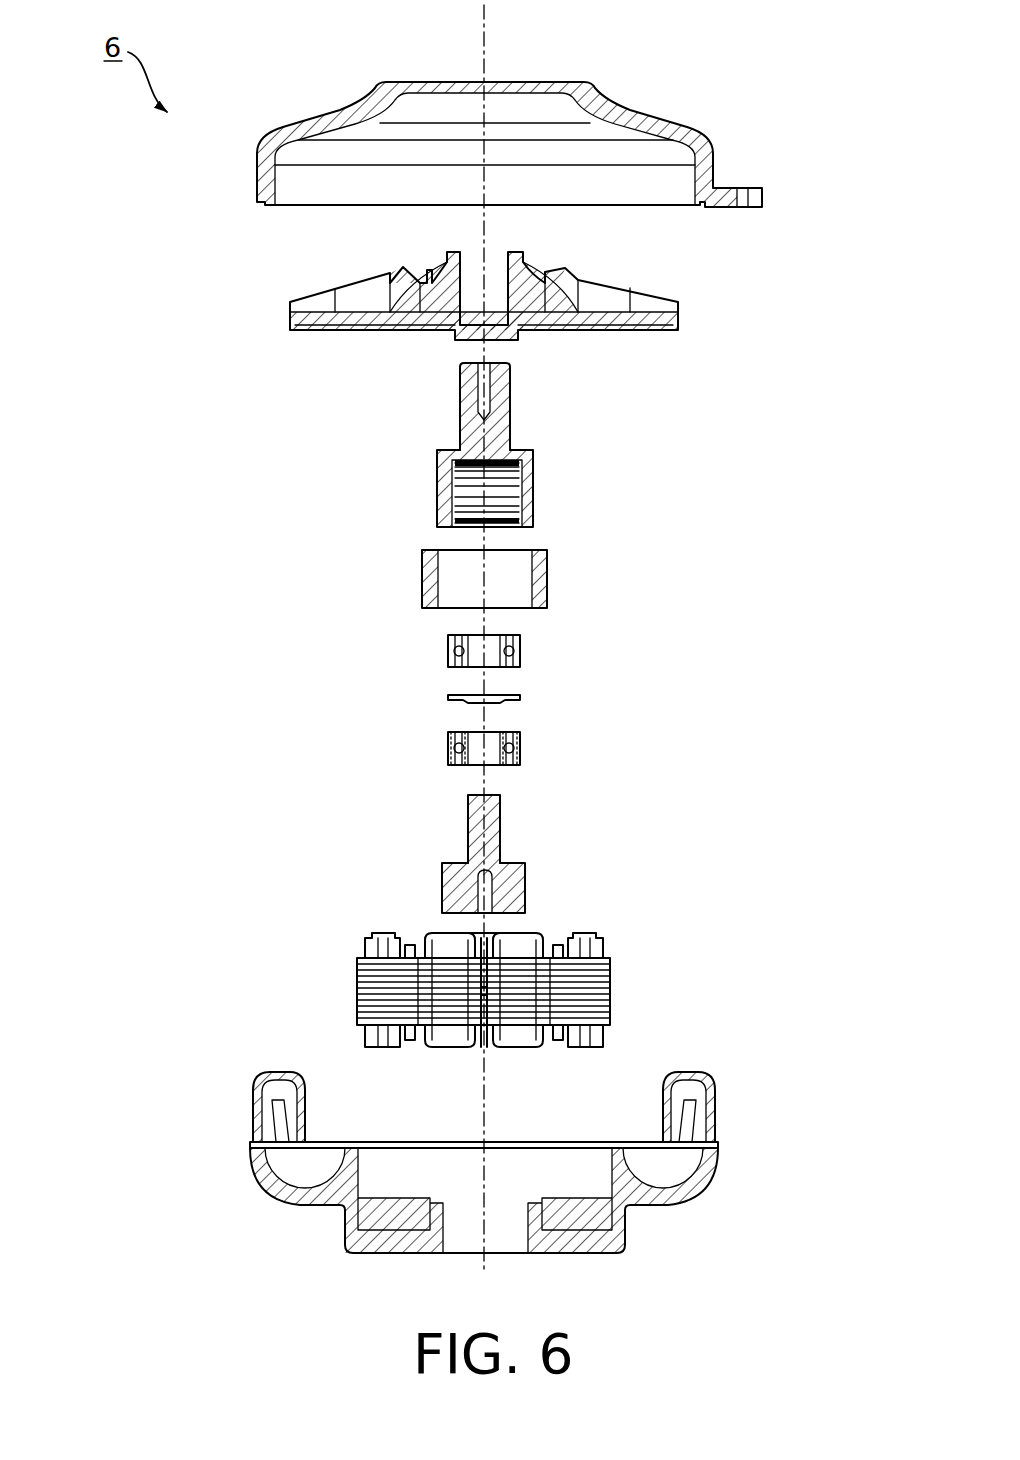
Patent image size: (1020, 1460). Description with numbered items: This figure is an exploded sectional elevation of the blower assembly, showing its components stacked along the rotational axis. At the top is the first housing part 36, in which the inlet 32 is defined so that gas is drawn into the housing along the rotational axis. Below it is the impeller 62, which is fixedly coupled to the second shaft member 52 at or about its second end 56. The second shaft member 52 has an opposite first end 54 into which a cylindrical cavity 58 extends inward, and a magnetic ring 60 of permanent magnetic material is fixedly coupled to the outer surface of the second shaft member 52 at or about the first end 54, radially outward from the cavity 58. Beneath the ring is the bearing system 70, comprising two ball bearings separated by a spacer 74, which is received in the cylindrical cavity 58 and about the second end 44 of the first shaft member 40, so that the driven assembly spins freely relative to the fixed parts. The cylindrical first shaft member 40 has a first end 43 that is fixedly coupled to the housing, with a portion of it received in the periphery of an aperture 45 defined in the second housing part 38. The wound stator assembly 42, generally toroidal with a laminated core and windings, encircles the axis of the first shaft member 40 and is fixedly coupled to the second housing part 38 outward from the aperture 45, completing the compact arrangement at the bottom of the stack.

The inlet 32 is at (512, 80).
The first housing part 36 is at (248, 152).
The impeller 62 is at (288, 313).
The second end 56 is at (515, 378).
The second shaft member 52 is at (478, 457).
The first end 54 is at (538, 506).
The cylindrical cavity 58 is at (484, 503).
The magnetic ring 60 is at (415, 578).
The bearing system 70 is at (401, 702).
The spacer 74 is at (442, 699).
The first shaft member 40 is at (477, 849).
The second end 44 is at (505, 800).
The first end 43 is at (530, 888).
The stator assembly 42 is at (350, 992).
The second housing part 38 is at (248, 1156).
The aperture 45 is at (525, 1230).